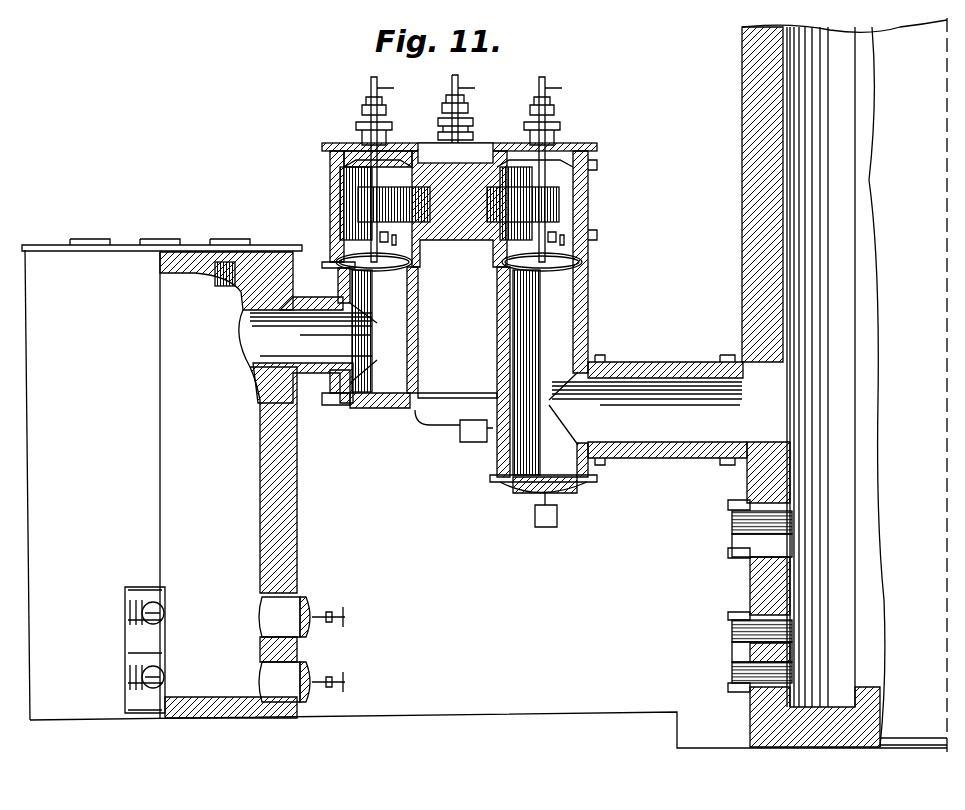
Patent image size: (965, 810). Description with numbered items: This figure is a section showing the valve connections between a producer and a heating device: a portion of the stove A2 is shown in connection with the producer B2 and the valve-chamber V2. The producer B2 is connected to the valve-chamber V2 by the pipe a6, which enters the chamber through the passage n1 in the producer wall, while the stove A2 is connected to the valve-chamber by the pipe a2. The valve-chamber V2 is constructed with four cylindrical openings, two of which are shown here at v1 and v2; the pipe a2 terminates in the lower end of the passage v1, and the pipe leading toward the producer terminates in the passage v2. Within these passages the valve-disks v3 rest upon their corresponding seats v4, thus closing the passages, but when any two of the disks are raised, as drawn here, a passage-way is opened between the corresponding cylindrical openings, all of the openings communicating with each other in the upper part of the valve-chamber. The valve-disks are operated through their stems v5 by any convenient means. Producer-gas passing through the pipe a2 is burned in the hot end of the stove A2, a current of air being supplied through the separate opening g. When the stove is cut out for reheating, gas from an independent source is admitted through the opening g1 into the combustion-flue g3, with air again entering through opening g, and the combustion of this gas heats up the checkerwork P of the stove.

The producer B2 is at (162, 479).
The port passage n1 is at (245, 280).
The pipe a6 is at (313, 350).
The checkerwork P is at (105, 655).
The valve-chamber V2 is at (459, 301).
The valve stems v5 is at (566, 126).
The valve seats v4 is at (459, 273).
The valve-disks v3 is at (479, 236).
The cylindrical opening v2 is at (377, 331).
The cylindrical opening v1 is at (540, 372).
The pipe a2 is at (648, 410).
The stove A2 is at (795, 387).
The combustion-flue g3 is at (844, 383).
The air opening g is at (760, 529).
The gas opening g1 is at (728, 620).